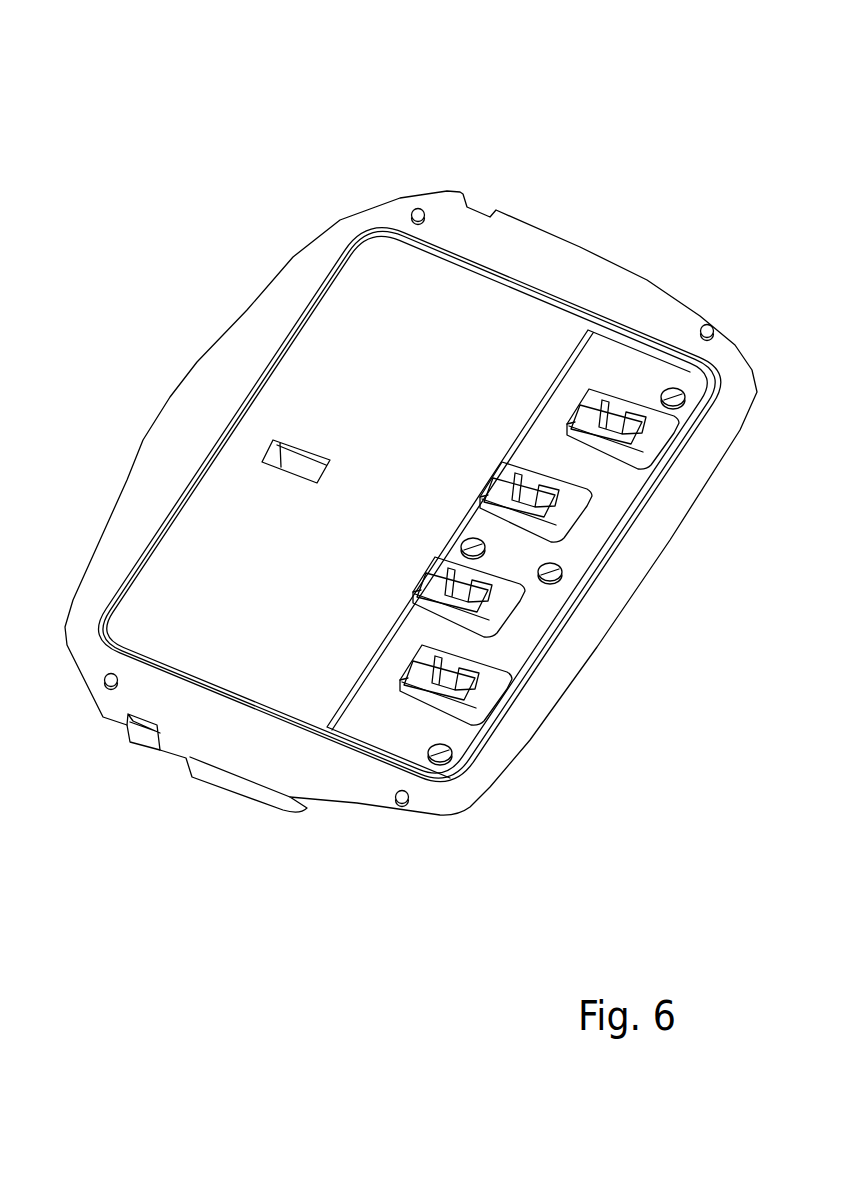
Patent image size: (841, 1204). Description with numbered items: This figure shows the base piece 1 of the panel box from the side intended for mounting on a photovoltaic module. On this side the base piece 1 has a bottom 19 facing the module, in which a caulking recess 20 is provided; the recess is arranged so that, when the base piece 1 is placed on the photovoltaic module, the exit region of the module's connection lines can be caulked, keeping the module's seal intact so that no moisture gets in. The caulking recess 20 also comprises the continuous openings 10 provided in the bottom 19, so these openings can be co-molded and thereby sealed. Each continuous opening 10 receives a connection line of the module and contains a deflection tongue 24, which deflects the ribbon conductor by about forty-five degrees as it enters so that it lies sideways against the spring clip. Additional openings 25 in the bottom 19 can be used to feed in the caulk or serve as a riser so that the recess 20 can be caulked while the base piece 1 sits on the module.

The base piece 1 is at (149, 151).
The bottom 19 is at (337, 355).
The caulking recess 20 is at (537, 428).
The continuous opening 10 is at (547, 465).
The deflection tongue 24 is at (463, 603).
The additional opening 25 is at (685, 397).